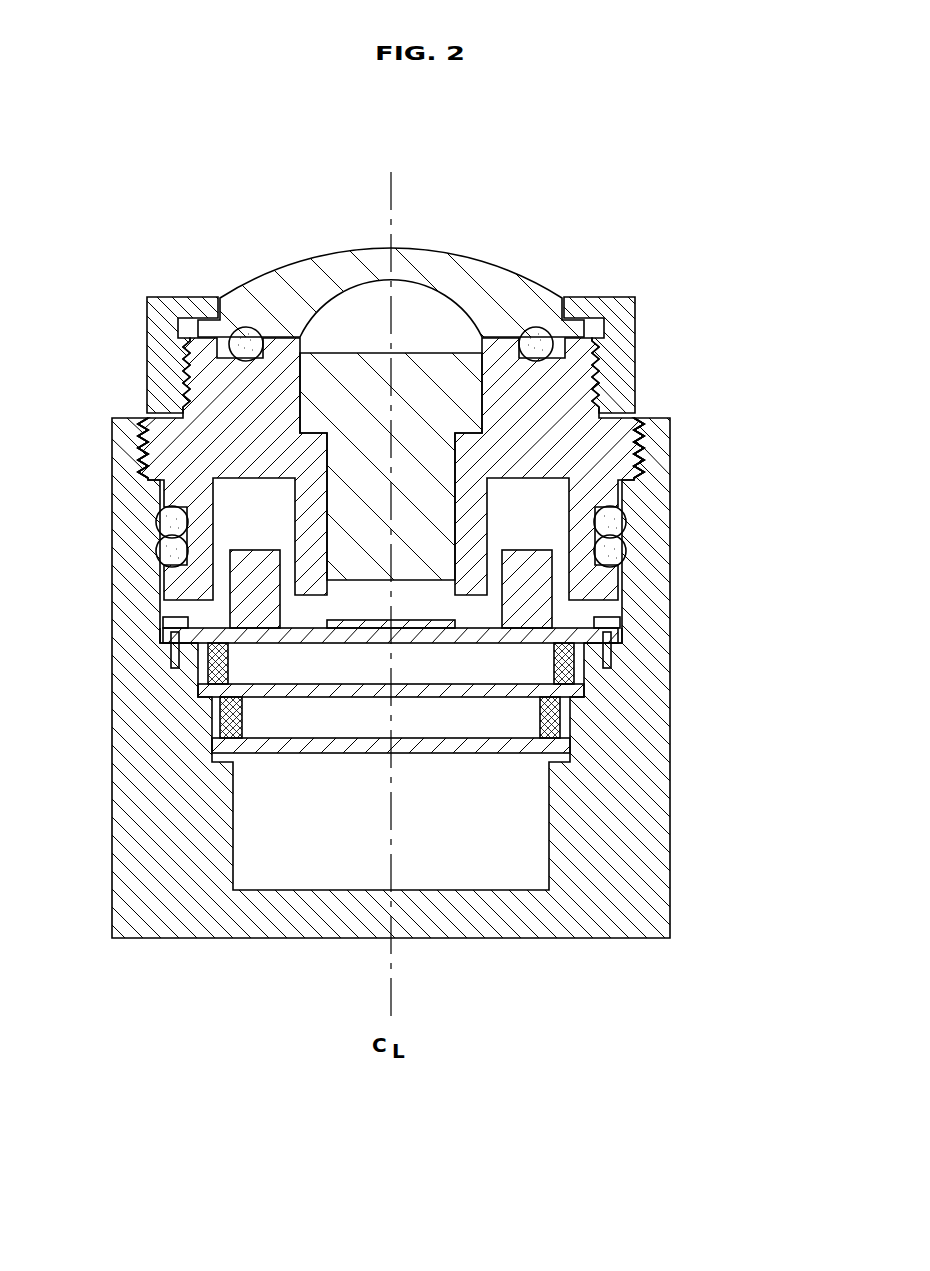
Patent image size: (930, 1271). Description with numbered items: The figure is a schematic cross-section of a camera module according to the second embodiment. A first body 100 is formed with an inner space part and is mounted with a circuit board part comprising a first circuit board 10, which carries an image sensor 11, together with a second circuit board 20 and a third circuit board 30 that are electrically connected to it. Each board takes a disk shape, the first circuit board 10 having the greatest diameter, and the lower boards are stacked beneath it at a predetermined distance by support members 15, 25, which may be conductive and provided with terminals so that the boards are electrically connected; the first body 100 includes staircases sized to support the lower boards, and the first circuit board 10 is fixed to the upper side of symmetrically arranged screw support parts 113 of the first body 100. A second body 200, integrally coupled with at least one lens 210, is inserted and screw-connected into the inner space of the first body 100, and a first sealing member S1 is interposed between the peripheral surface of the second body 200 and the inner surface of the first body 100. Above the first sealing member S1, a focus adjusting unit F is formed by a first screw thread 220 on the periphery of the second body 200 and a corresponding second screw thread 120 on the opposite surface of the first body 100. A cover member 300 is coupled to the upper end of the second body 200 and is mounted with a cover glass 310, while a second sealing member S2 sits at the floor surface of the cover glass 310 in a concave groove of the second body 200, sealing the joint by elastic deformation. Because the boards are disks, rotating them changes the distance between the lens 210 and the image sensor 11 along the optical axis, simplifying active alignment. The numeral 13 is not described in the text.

The first body 100 is at (640, 879).
The second body 200 is at (597, 462).
The cover member 300 is at (613, 320).
The cover glass 310 is at (433, 272).
The lens 210 is at (427, 380).
The first sealing member S1 is at (622, 542).
The second sealing member S2 is at (534, 341).
The second screw thread 120 is at (643, 453).
The first screw thread 220 is at (637, 423).
The focus adjusting unit F is at (773, 368).
The first circuit board 10 is at (207, 633).
The image sensor 11 is at (325, 620).
The filter 13 is at (612, 622).
The screw support part 113 is at (617, 646).
The support member 15 is at (568, 673).
The second circuit board 20 is at (260, 692).
The support member 25 is at (557, 720).
The third circuit board 30 is at (247, 745).